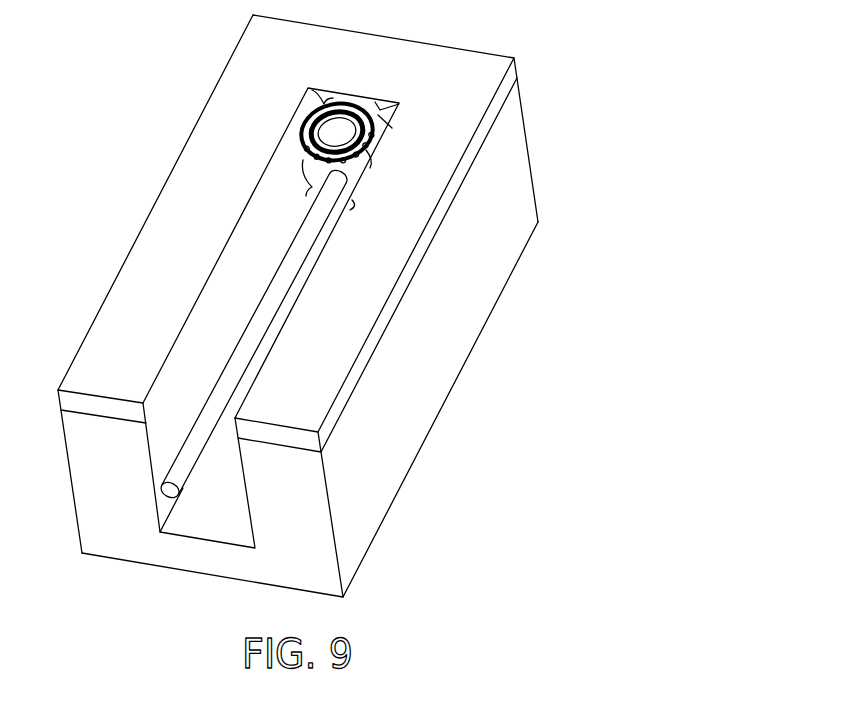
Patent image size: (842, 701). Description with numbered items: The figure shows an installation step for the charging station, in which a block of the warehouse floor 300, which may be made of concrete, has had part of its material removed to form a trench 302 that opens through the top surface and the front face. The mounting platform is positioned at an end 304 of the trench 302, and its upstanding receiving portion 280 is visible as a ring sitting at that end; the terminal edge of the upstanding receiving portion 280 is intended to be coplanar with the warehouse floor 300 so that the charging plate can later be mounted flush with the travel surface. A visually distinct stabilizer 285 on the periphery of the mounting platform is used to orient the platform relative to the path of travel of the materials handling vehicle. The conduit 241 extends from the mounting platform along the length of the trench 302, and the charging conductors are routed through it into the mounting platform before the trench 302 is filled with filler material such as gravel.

The warehouse floor 300 is at (212, 117).
The trench 302 is at (206, 295).
The conduit 241 is at (283, 247).
The upstanding receiving portion 280 is at (313, 89).
The visually distinct stabilizer 285 is at (365, 147).
The end of the trench 304 is at (376, 110).